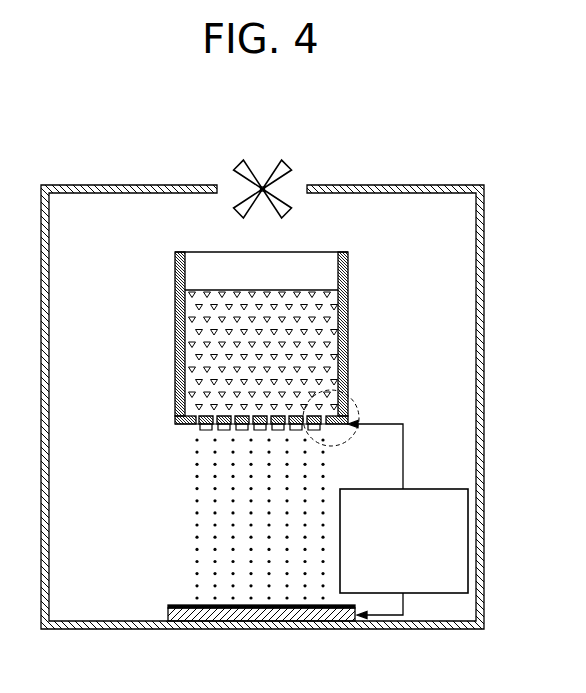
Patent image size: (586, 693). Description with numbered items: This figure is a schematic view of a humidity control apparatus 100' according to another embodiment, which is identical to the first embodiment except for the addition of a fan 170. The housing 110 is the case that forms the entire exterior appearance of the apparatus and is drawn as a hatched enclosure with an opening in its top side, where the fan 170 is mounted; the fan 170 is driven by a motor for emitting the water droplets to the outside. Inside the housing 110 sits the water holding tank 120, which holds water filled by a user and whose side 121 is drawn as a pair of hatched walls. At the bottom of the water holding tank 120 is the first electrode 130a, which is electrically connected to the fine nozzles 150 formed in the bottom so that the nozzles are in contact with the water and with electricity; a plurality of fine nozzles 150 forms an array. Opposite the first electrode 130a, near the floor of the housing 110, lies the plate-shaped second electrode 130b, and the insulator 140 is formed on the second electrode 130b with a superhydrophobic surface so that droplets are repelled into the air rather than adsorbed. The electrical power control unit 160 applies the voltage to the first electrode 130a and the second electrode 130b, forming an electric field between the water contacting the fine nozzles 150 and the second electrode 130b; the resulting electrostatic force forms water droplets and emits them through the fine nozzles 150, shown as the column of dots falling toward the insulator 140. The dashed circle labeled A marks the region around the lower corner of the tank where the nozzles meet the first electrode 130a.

The humidity control apparatus 100' is at (202, 94).
The housing 110 is at (483, 314).
The water holding tank 120 is at (320, 240).
The side 121 is at (176, 318).
The first electrode 130a is at (186, 427).
The second electrode 130b is at (240, 615).
The insulator 140 is at (328, 608).
The fine nozzle 150 is at (318, 432).
The electrical power control unit 160 is at (440, 489).
The fan 170 is at (290, 162).
The enlarged region A is at (357, 398).